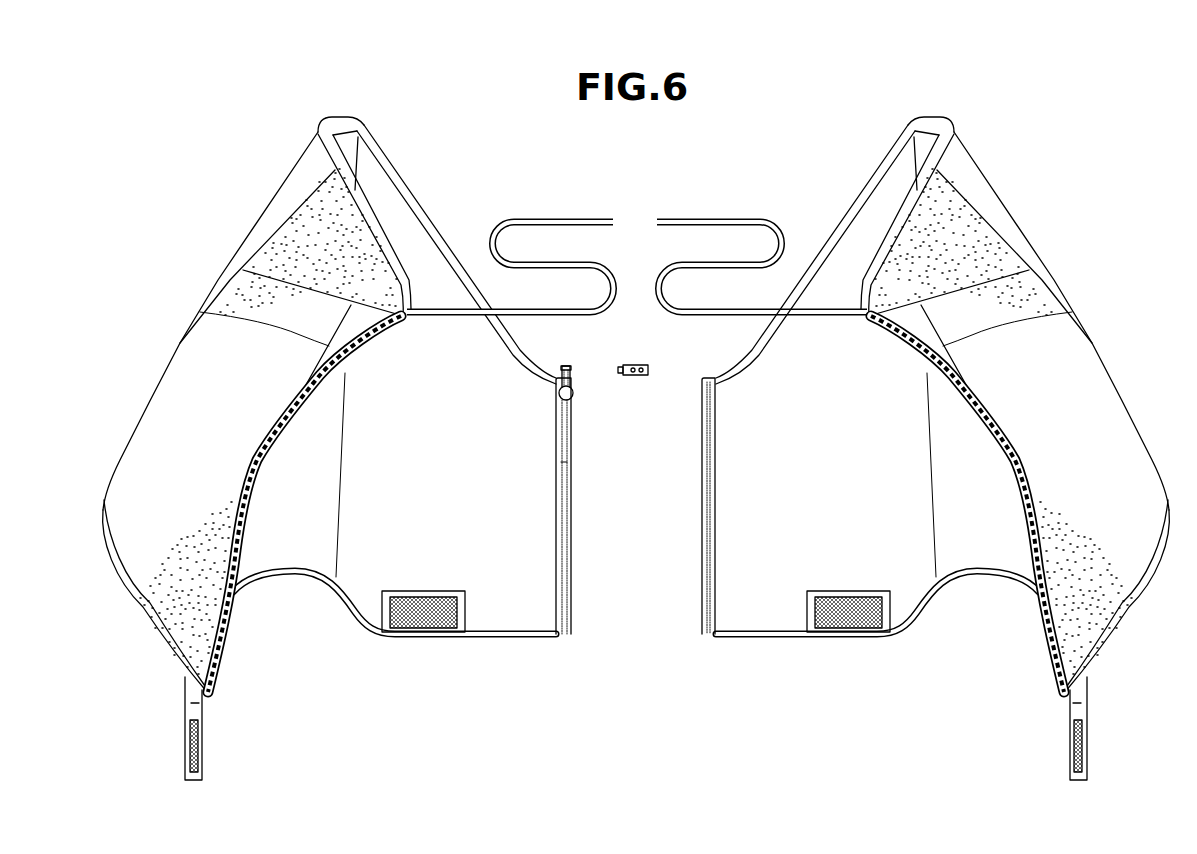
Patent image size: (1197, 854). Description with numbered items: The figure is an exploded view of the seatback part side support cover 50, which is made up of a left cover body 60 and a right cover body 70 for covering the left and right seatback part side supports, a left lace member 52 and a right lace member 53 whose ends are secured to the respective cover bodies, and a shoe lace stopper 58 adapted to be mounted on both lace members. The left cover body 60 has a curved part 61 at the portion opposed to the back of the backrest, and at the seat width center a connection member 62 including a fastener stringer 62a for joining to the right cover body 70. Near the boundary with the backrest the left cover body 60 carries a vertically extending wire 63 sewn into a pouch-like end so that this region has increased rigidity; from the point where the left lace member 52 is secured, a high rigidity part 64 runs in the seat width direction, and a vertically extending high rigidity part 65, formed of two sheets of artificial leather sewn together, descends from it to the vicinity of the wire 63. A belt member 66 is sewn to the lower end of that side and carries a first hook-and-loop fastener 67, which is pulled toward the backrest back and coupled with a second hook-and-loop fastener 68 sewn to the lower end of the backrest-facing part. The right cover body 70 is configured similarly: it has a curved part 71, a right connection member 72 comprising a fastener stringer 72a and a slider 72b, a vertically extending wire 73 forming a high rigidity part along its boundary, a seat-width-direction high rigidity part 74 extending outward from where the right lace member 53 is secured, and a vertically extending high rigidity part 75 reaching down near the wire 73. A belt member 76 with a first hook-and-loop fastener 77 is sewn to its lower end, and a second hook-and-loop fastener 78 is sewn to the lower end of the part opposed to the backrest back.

The seatback part side support cover 50 is at (130, 131).
The left lace member 52 is at (700, 219).
The right lace member 53 is at (572, 219).
The shoe lace stopper 58 is at (640, 362).
The left cover body 60 is at (979, 163).
The curved part 61 is at (858, 196).
The connection member 62 is at (697, 539).
The fastener stringer 62a is at (701, 600).
The wire 63 is at (1056, 655).
The high rigidity part 64 is at (960, 282).
The high rigidity part 65 is at (947, 347).
The belt member 66 is at (1077, 703).
The first hook-and-loop fastener 67 is at (1074, 752).
The second hook-and-loop fastener 68 is at (852, 618).
The right cover body 70 is at (293, 163).
The curved part 71 is at (413, 197).
The right connection member 72 is at (650, 402).
The fastener stringer 72a is at (566, 462).
The slider 72b is at (575, 396).
The wire 73 is at (215, 655).
The high rigidity part 74 is at (312, 282).
The high rigidity part 75 is at (327, 347).
The belt member 76 is at (197, 703).
The first hook-and-loop fastener 77 is at (197, 752).
The second hook-and-loop fastener 78 is at (418, 618).